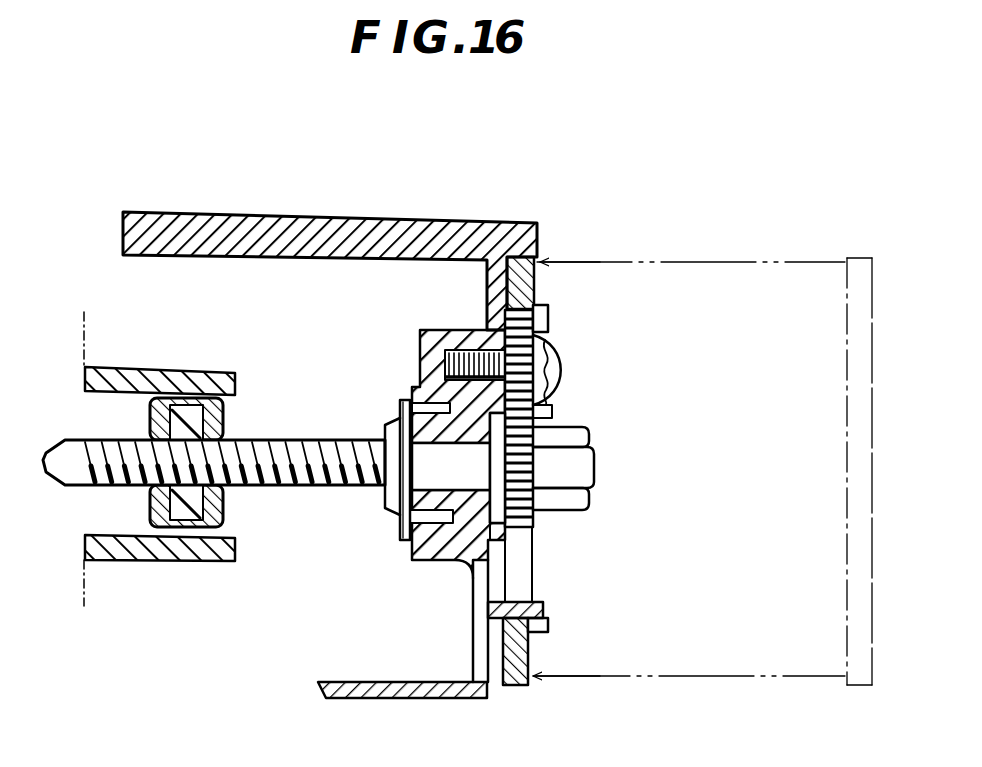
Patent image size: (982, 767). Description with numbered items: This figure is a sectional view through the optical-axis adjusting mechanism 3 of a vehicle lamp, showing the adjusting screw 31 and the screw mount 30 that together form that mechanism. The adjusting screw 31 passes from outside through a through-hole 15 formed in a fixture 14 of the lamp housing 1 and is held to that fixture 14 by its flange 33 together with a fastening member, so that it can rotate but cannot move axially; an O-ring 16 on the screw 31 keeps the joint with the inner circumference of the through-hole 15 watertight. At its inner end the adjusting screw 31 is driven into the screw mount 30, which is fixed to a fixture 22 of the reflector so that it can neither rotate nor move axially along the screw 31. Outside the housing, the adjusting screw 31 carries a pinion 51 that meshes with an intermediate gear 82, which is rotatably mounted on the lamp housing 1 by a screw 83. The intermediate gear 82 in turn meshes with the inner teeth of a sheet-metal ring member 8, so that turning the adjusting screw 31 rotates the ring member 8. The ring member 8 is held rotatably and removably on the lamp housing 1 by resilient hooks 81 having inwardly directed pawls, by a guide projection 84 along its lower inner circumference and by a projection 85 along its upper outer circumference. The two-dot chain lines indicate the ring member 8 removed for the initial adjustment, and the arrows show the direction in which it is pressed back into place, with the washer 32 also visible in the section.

The lamp housing 1 is at (412, 218).
The fixture 14 is at (420, 330).
The projection 85 is at (505, 305).
The ring member 8 is at (540, 259).
The resilient hooks 81 is at (548, 314).
The screw 83 is at (560, 358).
The intermediate gear 82 is at (552, 402).
The pinion 51 is at (515, 443).
The optical-axis adjusting mechanism 3 is at (602, 484).
The flange 33 is at (497, 497).
The guide projection 84 is at (543, 606).
The O-ring 16 is at (455, 558).
The through-hole 15 is at (424, 560).
The fixture 22 is at (140, 367).
The screw mount 30 is at (181, 563).
The adjusting screw 31 is at (263, 490).
The flange washer 32 is at (388, 516).